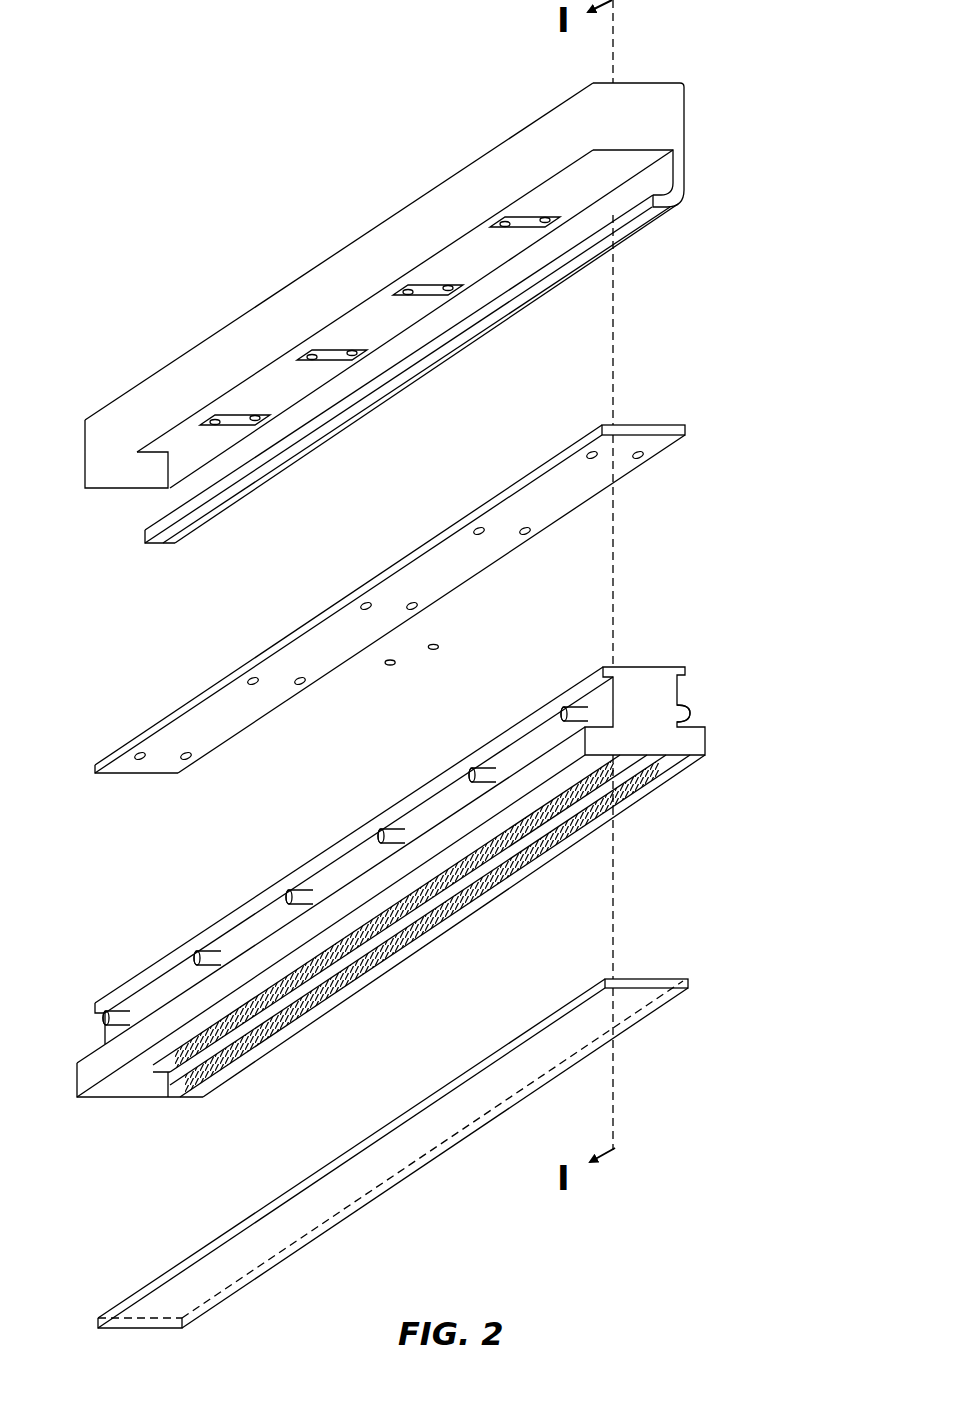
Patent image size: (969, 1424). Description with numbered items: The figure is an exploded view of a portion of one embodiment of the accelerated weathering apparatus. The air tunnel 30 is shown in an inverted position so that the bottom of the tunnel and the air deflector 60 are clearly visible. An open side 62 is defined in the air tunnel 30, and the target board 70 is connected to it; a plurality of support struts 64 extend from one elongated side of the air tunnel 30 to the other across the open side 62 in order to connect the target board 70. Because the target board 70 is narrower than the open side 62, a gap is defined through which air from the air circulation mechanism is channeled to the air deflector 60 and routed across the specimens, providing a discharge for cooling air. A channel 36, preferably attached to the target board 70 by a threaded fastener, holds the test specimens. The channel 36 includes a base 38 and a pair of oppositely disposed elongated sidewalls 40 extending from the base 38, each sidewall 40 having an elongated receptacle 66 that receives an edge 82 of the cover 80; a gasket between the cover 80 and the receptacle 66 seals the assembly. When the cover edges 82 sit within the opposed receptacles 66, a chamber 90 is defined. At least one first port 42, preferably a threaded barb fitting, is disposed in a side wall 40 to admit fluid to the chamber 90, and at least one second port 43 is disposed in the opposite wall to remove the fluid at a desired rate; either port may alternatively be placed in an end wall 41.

The air tunnel 30 is at (375, 332).
The channel 36 is at (412, 879).
The base 38 is at (688, 670).
The sidewall 40 is at (558, 762).
The end wall 41 is at (646, 675).
The first port 42 is at (478, 768).
The second port 43 is at (692, 712).
The air deflector 60 is at (150, 541).
The open side 62 is at (128, 484).
The support strut 64 is at (532, 212).
The elongated receptacle 66 is at (345, 988).
The target board 70 is at (121, 745).
The cover 80 is at (393, 1159).
The edge 82 is at (330, 1162).
The chamber 90 is at (151, 1098).